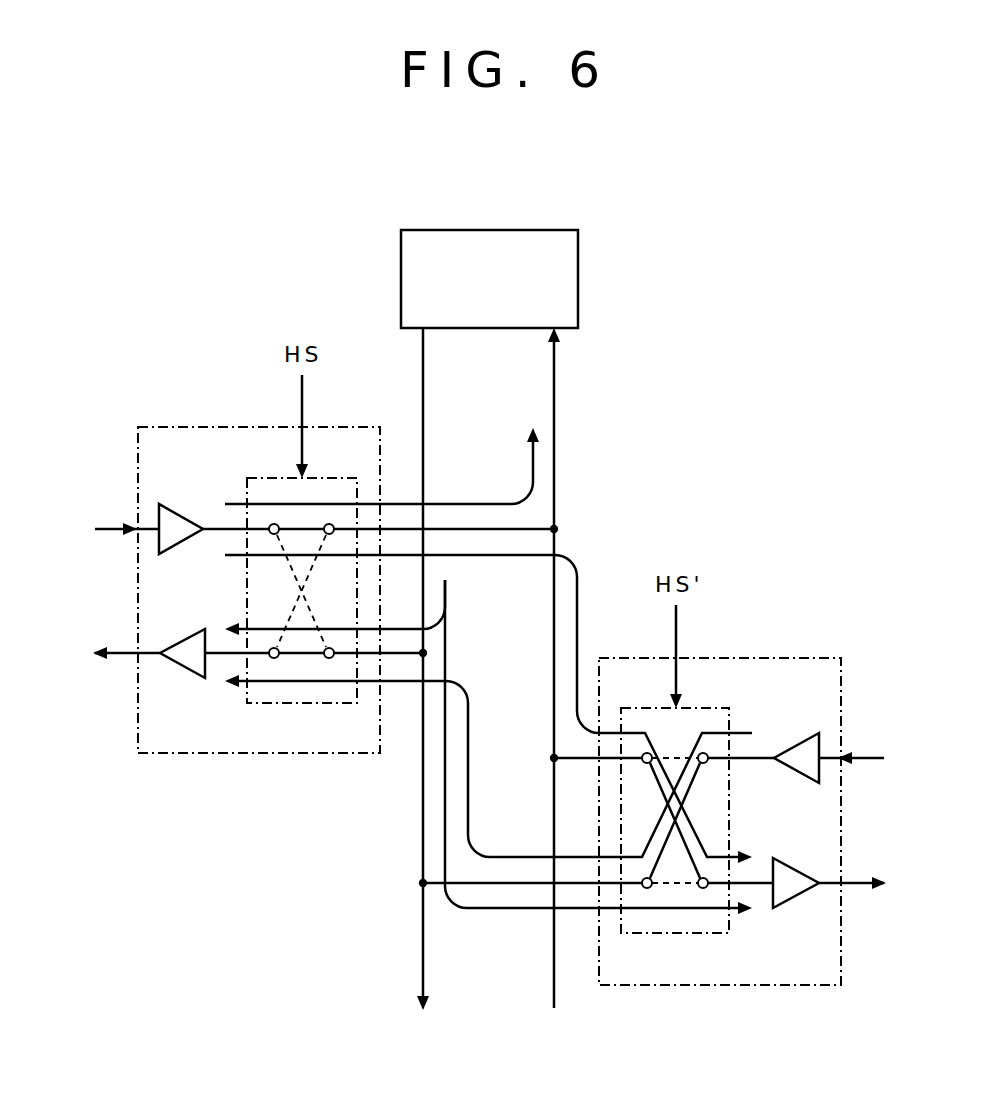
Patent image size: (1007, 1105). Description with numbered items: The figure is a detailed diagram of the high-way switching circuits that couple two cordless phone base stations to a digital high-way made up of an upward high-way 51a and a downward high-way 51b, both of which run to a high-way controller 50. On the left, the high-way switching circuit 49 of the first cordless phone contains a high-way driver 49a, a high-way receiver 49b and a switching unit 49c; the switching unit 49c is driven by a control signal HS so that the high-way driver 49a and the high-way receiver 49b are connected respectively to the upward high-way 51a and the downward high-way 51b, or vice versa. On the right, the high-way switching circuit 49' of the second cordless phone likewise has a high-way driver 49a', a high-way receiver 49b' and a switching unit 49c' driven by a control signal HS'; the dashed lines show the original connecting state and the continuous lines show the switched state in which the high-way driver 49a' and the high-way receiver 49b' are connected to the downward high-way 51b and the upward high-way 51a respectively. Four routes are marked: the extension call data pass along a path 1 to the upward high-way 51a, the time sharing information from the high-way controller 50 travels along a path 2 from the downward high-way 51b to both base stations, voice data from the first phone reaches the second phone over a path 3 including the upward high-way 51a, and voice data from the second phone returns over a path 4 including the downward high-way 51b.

The high-way controller 50 is at (545, 230).
The upward high-way 51a is at (556, 381).
The downward high-way 51b is at (423, 377).
The path 1 is at (533, 456).
The path 2 is at (445, 810).
The path 3 is at (577, 592).
The path 4 is at (468, 695).
The high-way switching circuit 49 is at (259, 560).
The high-way driver 49a is at (151, 498).
The high-way receiver 49b is at (150, 623).
The switching unit 49c is at (380, 573).
The high-way switching circuit 49' is at (720, 792).
The high-way driver 49a' is at (829, 728).
The high-way receiver 49b' is at (829, 853).
The switching unit 49c' is at (597, 803).